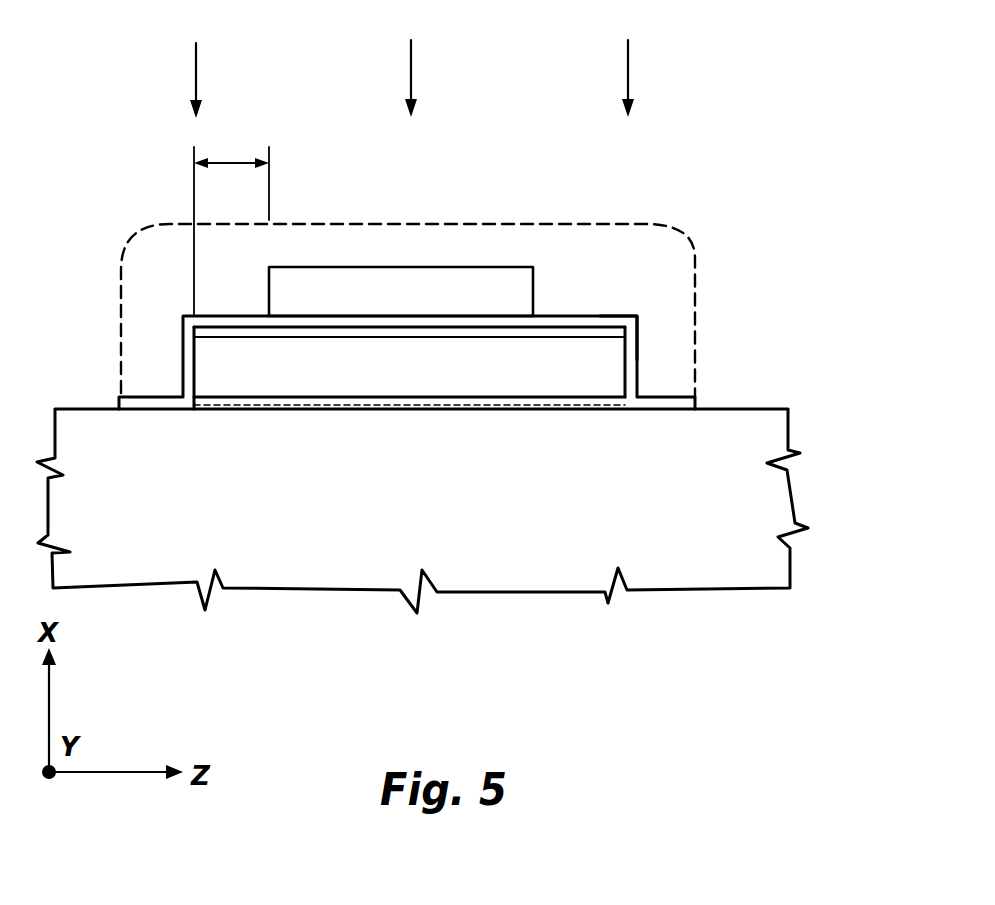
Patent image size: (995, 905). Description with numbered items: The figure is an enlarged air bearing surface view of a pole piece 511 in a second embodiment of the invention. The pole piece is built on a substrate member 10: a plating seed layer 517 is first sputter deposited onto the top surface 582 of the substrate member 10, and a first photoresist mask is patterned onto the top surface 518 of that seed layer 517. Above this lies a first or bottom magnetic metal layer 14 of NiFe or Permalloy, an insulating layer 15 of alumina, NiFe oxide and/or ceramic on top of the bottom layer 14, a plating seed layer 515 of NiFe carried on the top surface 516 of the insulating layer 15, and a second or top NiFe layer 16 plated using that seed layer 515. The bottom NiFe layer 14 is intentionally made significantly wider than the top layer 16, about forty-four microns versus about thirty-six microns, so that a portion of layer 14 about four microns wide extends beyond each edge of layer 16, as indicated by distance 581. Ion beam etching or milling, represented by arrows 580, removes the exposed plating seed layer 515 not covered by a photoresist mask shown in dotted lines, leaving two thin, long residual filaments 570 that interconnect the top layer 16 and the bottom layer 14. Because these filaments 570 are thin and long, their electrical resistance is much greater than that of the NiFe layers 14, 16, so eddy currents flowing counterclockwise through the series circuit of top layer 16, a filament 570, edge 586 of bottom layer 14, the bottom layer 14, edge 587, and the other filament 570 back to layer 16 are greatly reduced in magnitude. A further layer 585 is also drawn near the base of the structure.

The substrate member 10 is at (715, 560).
The bottom magnetic metal layer 14 is at (605, 383).
The insulating layer 15 is at (543, 328).
The top magnetic metal layer 16 is at (505, 277).
The pole piece 511 is at (710, 183).
The plating seed layer 515 is at (637, 315).
The top surface of insulating layer 516 is at (398, 323).
The plating seed layer 517 is at (412, 397).
The top surface of plating seed layer 518 is at (266, 395).
The residual filaments of plating seed layer 570 is at (222, 315).
The ion beam etching arrows 580 is at (196, 77).
The distance 581 is at (232, 160).
The top surface of substrate member 582 is at (757, 407).
The layer 585 is at (367, 337).
The edge of bottom NiFe layer 586 is at (194, 363).
The edge of bottom NiFe layer 587 is at (625, 359).